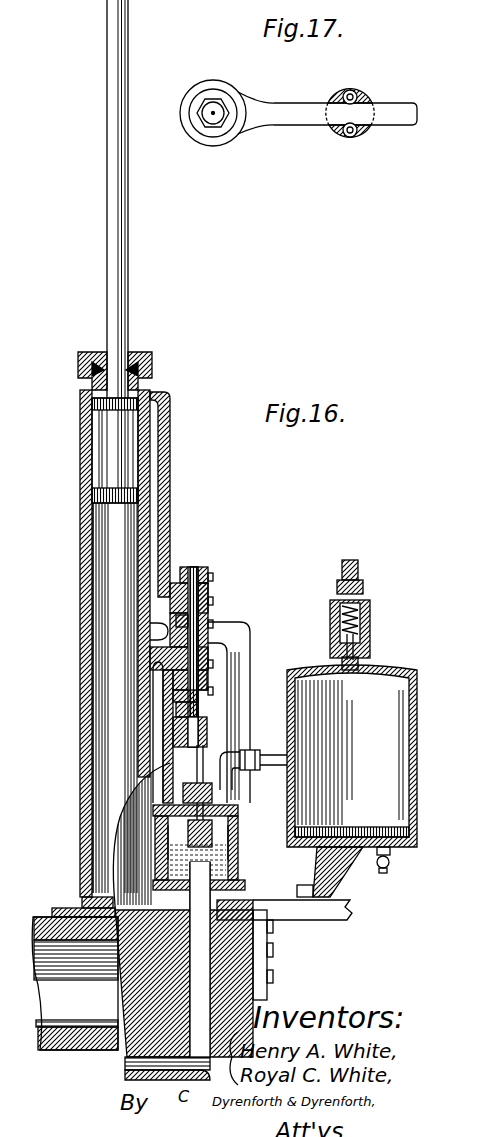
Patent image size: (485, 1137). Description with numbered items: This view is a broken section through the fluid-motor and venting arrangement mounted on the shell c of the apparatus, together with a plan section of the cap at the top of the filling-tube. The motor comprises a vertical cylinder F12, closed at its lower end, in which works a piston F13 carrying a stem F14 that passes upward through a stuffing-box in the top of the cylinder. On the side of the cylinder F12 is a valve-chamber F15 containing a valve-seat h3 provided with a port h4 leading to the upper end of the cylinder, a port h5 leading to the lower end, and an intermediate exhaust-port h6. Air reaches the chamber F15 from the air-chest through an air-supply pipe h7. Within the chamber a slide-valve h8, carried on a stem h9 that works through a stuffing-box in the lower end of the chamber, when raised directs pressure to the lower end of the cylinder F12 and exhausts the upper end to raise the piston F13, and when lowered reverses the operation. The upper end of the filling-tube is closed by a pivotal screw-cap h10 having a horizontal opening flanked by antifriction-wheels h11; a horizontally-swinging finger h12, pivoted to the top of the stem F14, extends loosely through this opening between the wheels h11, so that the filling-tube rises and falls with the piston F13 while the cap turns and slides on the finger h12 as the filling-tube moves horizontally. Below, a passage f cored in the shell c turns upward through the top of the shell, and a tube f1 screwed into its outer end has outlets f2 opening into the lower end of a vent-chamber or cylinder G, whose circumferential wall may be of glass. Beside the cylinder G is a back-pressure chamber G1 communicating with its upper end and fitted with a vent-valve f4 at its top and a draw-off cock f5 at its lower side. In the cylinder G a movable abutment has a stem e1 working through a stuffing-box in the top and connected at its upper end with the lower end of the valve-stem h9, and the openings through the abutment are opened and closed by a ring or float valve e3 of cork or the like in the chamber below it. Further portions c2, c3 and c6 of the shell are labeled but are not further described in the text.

In FIG. 17, the stem F14 is at (212, 110).
In FIG. 16, the stem F14 is at (86, 199).
In FIG. 16, the piston F13 is at (107, 441).
In FIG. 16, the cylinder F12 is at (88, 603).
In FIG. 16, the valve-chamber F15 is at (208, 578).
In FIG. 16, the valve-seat h3 is at (198, 612).
In FIG. 16, the port h4 is at (153, 563).
In FIG. 16, the port h5 is at (157, 695).
In FIG. 16, the exhaust-port h6 is at (153, 630).
In FIG. 16, the air-supply pipe h7 is at (243, 716).
In FIG. 16, the slide-valve h8 is at (200, 622).
In FIG. 16, the stem h9 is at (198, 731).
In FIG. 17, the pivotal screw-cap h10 is at (366, 100).
In FIG. 17, the antifriction-wheels h11 is at (350, 93).
In FIG. 17, the horizontally-swinging finger h12 is at (281, 110).
In FIG. 16, the passage f is at (270, 756).
In FIG. 16, the tube f1 is at (240, 897).
In FIG. 16, the outlets f2 is at (210, 868).
In FIG. 16, the vent-valve f4 is at (365, 603).
In FIG. 16, the draw-off cock f5 is at (392, 873).
In FIG. 16, the stem e1 is at (197, 770).
In FIG. 16, the ring or float valve e3 is at (220, 845).
In FIG. 16, the vent-chamber or cylinder G is at (233, 827).
In FIG. 16, the back-pressure chamber G1 is at (403, 670).
In FIG. 16, the shell c is at (180, 833).
In FIG. 16, the band c2 is at (187, 835).
In FIG. 16, the flange c3 is at (33, 940).
In FIG. 16, the base block c6 is at (59, 983).